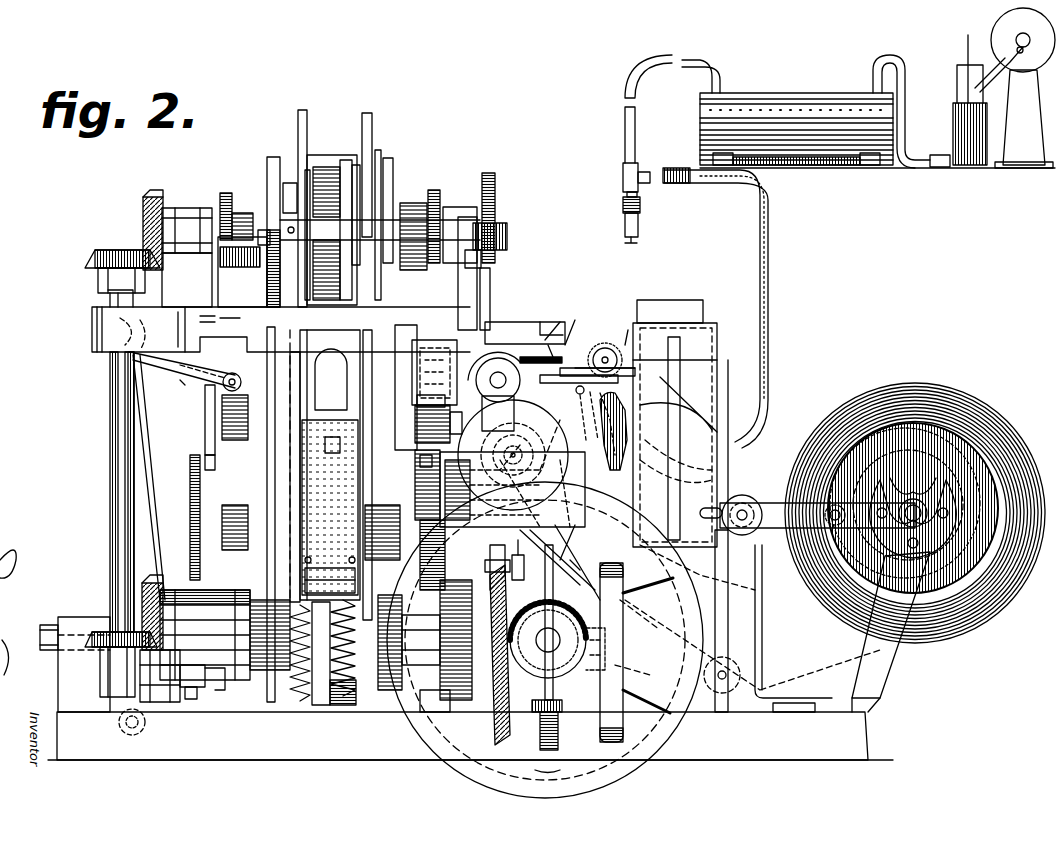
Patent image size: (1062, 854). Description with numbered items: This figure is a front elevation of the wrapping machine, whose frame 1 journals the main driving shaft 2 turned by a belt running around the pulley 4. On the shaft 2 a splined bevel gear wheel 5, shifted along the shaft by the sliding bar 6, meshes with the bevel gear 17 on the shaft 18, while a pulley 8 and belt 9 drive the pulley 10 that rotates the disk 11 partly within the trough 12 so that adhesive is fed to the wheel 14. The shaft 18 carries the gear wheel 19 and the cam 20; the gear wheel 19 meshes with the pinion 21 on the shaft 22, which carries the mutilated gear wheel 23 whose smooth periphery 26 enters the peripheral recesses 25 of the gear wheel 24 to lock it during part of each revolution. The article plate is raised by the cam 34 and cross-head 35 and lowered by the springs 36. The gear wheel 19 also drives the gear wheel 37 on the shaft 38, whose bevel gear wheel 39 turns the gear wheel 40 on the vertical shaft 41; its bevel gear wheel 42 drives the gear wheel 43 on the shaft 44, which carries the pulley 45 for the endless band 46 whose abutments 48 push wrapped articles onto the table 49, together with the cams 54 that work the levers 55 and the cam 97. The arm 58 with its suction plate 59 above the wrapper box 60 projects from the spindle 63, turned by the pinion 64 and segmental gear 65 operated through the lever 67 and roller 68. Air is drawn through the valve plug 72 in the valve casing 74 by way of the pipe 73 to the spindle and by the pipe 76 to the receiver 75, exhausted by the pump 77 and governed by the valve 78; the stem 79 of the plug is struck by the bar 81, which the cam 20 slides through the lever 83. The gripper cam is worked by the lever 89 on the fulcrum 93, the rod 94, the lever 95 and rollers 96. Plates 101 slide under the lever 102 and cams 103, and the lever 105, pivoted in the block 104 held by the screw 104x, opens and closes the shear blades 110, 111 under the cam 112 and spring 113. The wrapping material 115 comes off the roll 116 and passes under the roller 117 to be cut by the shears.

The frame 1 is at (551, 464).
The main driving shaft 2 is at (552, 652).
The pulley 4 is at (605, 775).
The bevel gear wheel 5 is at (556, 600).
The sliding bar 6 is at (610, 642).
The pulley 8 is at (630, 668).
The belt 9 is at (585, 538).
The pulley 10 is at (513, 455).
The disk 11 is at (488, 405).
The trough 12 is at (580, 560).
The wheel 14 is at (531, 440).
The bevel gear 17 is at (496, 700).
The shaft 18 is at (47, 625).
The gear wheel 19 is at (455, 698).
The cam 20 is at (170, 695).
The pinion 21 is at (482, 480).
The shaft 22 is at (381, 475).
The mutilated gear wheel 23 is at (418, 480).
The gear wheel 24 is at (425, 382).
The peripheral recesses 25 is at (420, 432).
The smooth periphery 26 is at (430, 505).
The cam 34 is at (345, 705).
The cross-head 35 is at (325, 466).
The springs 36 is at (300, 705).
The gear wheel 37 is at (395, 700).
The shaft 38 is at (292, 600).
The bevel gear wheel 39 is at (155, 583).
The gear wheel 40 is at (95, 632).
The shaft 41 is at (110, 452).
The bevel gear wheel 42 is at (90, 262).
The gear wheel 43 is at (143, 215).
The shaft 44 is at (185, 225).
The pulley 45 is at (325, 170).
The endless band 46 is at (347, 165).
The abutments 48 is at (356, 165).
The table 49 is at (398, 312).
The cams 54 is at (438, 205).
The levers 55 is at (415, 208).
The arm 58 is at (555, 357).
The plate 59 is at (533, 323).
The box 60 is at (705, 325).
The spindle 63 is at (608, 348).
The pinion 64 is at (625, 330).
The segmental gear 65 is at (600, 430).
The lever 67 is at (519, 552).
The roller 68 is at (497, 560).
The valve plug 72 is at (572, 390).
The pipe 73 is at (620, 436).
The valve casing 74 is at (582, 405).
The receiver 75 is at (816, 111).
The pipe 76 is at (785, 322).
The pump 77 is at (955, 122).
The valve 78 is at (648, 217).
The stem 79 is at (567, 320).
The bar 81 is at (548, 320).
The lever 83 is at (160, 420).
The lever 89 is at (160, 362).
The fulcrum 93 is at (220, 430).
The rod 94 is at (205, 480).
The lever 95 is at (200, 690).
The rollers 96 is at (220, 710).
The cam 97 is at (272, 158).
The plates 101 is at (370, 118).
The lever 102 is at (378, 155).
The cams 103 is at (390, 162).
The block 104 is at (405, 325).
The screw 104x is at (462, 210).
The lever 105 is at (478, 258).
The blade 110 is at (486, 290).
The blade 111 is at (458, 354).
The cam 112 is at (490, 210).
The spring 113 is at (245, 268).
The wrapping material 115 is at (885, 650).
The roll 116 is at (918, 397).
The roller 117 is at (712, 690).